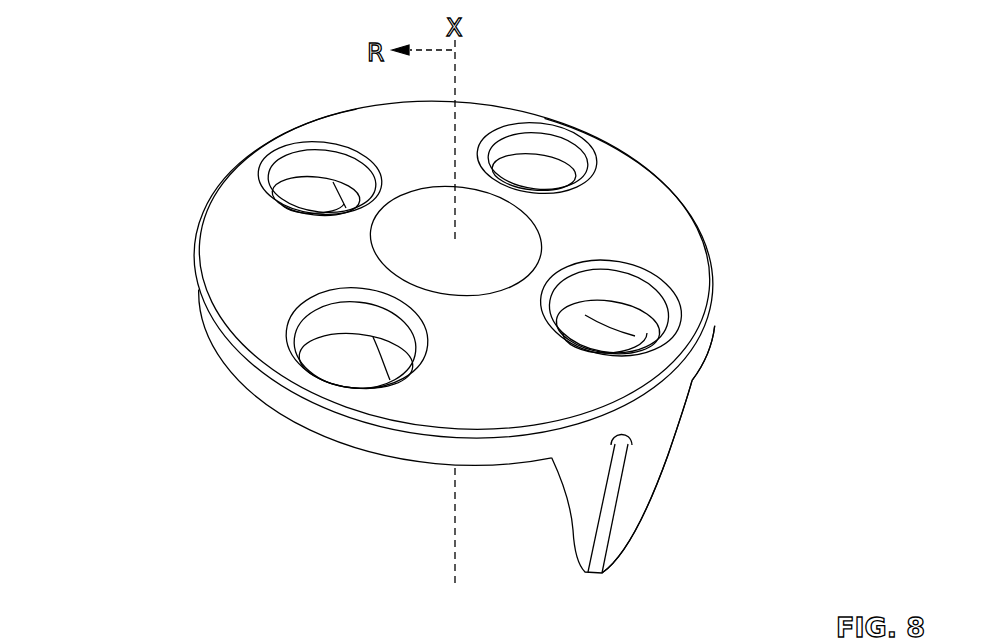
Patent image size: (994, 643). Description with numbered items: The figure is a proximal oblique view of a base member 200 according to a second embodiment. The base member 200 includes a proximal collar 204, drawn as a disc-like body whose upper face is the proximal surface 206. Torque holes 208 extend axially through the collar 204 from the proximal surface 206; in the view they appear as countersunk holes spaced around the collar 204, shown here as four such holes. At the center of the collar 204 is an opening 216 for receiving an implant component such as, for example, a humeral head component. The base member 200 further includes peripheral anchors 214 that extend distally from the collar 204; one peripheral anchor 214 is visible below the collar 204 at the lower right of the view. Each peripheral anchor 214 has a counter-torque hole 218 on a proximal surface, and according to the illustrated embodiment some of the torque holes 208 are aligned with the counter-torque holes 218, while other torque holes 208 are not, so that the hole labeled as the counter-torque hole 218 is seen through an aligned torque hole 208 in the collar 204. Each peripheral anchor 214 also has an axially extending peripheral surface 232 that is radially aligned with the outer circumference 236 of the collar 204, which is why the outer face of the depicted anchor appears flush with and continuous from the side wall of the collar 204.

The base member 200 is at (131, 62).
The proximal collar 204 is at (257, 168).
The proximal surface 206 is at (377, 146).
The torque holes 208 is at (548, 131).
The peripheral anchors 214 is at (630, 555).
The opening 216 is at (540, 247).
The counter-torque hole 218 is at (608, 328).
The peripheral surface 232 is at (650, 466).
The outer circumference 236 is at (688, 363).